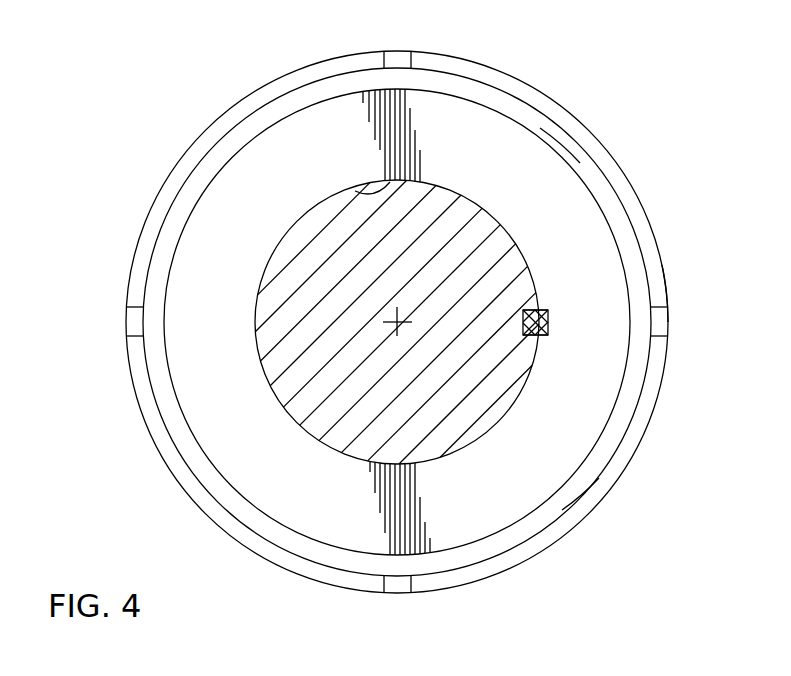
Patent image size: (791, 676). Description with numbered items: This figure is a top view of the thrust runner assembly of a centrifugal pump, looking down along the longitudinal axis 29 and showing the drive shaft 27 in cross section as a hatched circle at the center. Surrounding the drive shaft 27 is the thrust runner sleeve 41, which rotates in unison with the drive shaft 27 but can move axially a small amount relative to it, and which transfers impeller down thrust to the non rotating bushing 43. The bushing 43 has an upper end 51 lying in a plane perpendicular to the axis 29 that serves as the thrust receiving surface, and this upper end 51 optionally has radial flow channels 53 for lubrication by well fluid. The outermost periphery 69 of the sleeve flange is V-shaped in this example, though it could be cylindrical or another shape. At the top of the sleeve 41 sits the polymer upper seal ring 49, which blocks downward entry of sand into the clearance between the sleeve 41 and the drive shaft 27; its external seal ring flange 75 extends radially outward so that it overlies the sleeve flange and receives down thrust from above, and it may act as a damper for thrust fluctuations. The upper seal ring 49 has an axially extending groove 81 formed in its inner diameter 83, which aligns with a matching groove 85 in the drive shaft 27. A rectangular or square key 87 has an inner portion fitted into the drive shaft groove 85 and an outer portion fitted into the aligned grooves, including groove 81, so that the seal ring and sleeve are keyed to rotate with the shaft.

The drive shaft 27 is at (305, 405).
The longitudinal axis 29 is at (393, 318).
The thrust runner sleeve 41 is at (627, 252).
The bushing 43 is at (625, 170).
The upper seal ring 49 is at (557, 142).
The upper end of bushing 51 is at (658, 275).
The radial flow channels 53 is at (655, 322).
The periphery of flange 69 is at (542, 110).
The seal ring flange 75 is at (532, 492).
The axially extending groove 81 is at (547, 333).
The inner diameter of upper seal ring 83 is at (355, 191).
The drive shaft groove 85 is at (548, 312).
The key 87 is at (535, 335).